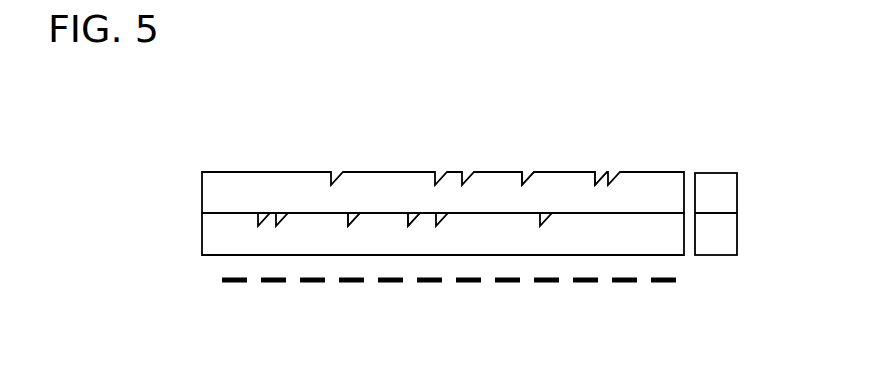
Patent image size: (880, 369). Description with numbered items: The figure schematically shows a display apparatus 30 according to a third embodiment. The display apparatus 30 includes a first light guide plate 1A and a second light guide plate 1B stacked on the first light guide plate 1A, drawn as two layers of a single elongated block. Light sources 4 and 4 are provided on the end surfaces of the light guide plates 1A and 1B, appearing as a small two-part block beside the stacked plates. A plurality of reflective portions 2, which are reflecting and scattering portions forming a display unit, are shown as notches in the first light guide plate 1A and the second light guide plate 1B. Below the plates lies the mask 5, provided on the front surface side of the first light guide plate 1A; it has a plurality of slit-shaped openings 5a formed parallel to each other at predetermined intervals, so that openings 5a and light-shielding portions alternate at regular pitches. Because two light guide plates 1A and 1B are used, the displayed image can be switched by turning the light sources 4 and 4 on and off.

The display apparatus 30 is at (731, 137).
The first light guide plate 1A is at (202, 196).
The second light guide plate 1B is at (202, 236).
The reflective portion 2 is at (352, 213).
The light source 4 is at (737, 192).
The mask 5 is at (665, 283).
The slit-shaped opening 5a is at (605, 283).